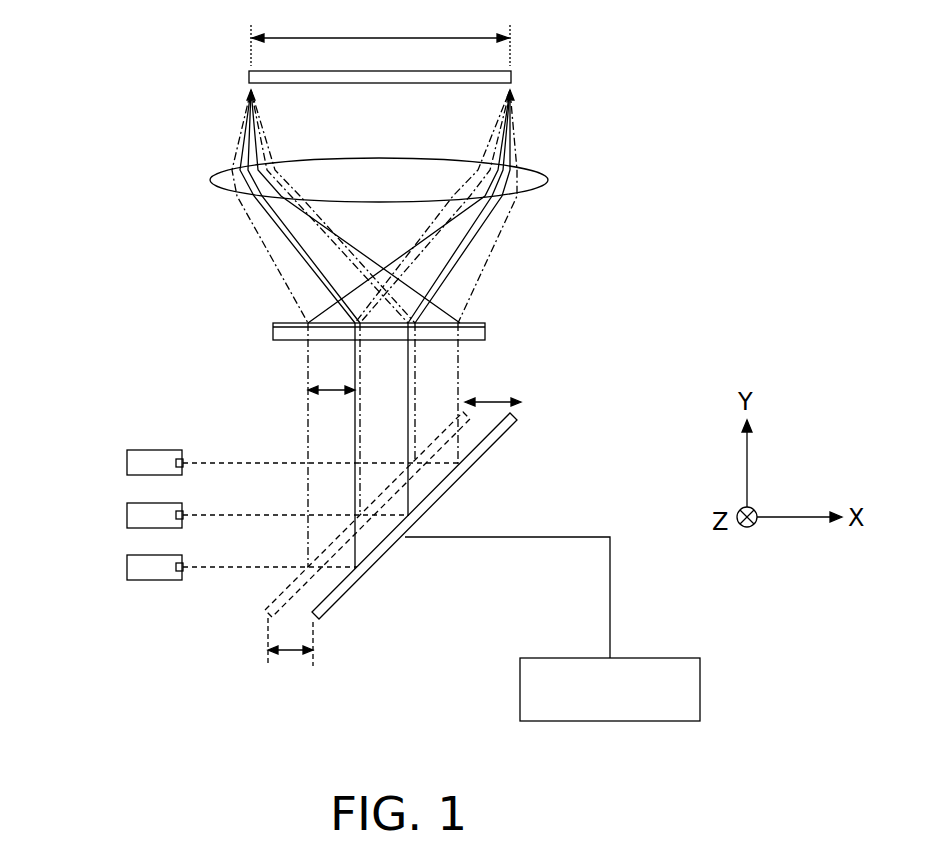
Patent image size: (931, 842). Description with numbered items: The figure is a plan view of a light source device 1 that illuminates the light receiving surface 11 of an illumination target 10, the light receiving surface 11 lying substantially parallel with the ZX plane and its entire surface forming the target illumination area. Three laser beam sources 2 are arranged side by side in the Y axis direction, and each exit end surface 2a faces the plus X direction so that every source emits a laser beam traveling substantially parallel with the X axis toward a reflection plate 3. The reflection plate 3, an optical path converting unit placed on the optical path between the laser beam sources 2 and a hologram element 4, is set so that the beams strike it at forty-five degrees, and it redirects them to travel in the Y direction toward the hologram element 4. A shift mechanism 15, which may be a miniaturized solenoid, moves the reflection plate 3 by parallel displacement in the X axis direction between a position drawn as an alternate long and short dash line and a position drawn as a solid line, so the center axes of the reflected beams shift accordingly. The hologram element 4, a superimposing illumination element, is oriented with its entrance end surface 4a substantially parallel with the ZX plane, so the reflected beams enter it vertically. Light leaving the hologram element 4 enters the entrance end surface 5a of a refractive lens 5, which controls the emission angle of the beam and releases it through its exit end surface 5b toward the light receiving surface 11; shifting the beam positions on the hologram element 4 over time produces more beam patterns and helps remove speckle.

The light source device 1 is at (119, 88).
The laser beam source 2 is at (127, 462).
The exit end surface 2a is at (184, 458).
The reflection plate 3 is at (512, 418).
The hologram element 4 is at (487, 331).
The entrance end surface 4a is at (273, 338).
The refractive lens 5 is at (548, 181).
The entrance end surface 5a is at (533, 196).
The exit end surface 5b is at (532, 165).
The illumination target 10 is at (513, 77).
The light receiving surface 11 is at (272, 84).
The shift mechanism 15 is at (702, 690).